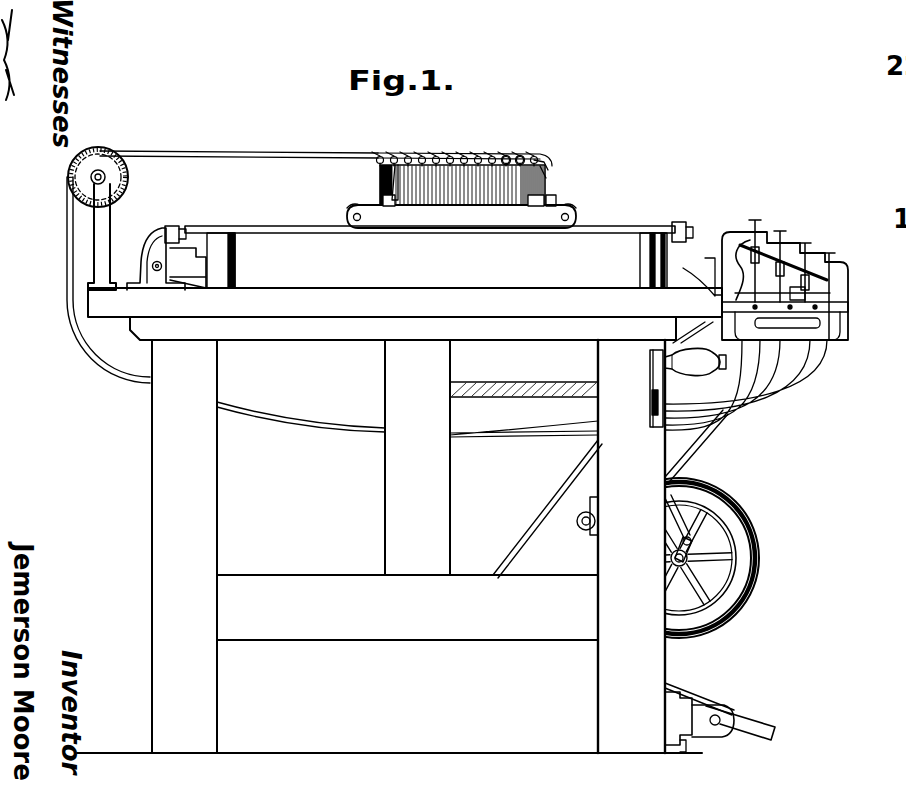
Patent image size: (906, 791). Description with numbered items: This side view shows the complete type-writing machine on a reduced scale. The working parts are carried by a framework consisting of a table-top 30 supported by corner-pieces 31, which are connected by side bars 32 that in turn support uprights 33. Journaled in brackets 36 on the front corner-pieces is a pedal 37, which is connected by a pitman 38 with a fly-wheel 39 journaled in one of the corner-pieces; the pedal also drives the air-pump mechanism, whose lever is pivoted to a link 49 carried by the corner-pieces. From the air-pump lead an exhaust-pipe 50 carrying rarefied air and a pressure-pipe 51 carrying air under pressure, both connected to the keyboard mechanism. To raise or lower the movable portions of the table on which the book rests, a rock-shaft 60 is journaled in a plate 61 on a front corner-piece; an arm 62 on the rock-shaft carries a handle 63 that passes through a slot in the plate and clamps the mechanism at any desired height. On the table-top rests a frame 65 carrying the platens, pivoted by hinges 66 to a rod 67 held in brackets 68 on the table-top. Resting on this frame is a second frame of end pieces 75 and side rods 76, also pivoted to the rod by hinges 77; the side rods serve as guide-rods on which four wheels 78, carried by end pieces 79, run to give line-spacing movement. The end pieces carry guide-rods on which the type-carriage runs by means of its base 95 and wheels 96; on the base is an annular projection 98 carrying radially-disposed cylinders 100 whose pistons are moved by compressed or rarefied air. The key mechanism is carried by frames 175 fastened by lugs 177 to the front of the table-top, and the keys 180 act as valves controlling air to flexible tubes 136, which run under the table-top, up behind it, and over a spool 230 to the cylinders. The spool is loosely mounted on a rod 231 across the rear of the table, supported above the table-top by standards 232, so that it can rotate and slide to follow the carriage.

The table-top 30 is at (405, 315).
The corner-pieces 31 is at (389, 546).
The side bars 32 is at (407, 607).
The uprights 33 is at (417, 457).
The brackets 36 is at (688, 716).
The pedal 37 is at (736, 712).
The pitman 38 is at (668, 568).
The fly-wheel 39 is at (749, 557).
The link 49 is at (580, 528).
The exhaust-pipe 50 is at (686, 452).
The pressure-pipe 51 is at (575, 473).
The rock-shaft 60 is at (522, 382).
The plate 61 is at (657, 413).
The arm 62 is at (650, 372).
The handle 63 is at (693, 350).
The frame 65 is at (468, 219).
The hinges 66 is at (193, 265).
The rod 67 is at (153, 262).
The brackets 68 is at (194, 302).
The end pieces 75 is at (176, 226).
The side rods 76 is at (288, 226).
The hinges 77 is at (158, 228).
The wheels 78 is at (357, 206).
The end pieces 79 is at (501, 222).
The base of the type-carriage 95 is at (410, 208).
The wheels 96 is at (541, 187).
The annular projection 98 is at (452, 157).
The radially-disposed cylinders 100 is at (519, 156).
The flexible tubes 136 is at (300, 152).
The frames 175 is at (845, 287).
The lugs 177 is at (640, 262).
The keys 180 is at (786, 235).
The spool 230 is at (93, 148).
The rod 231 is at (91, 177).
The standards 232 is at (100, 265).